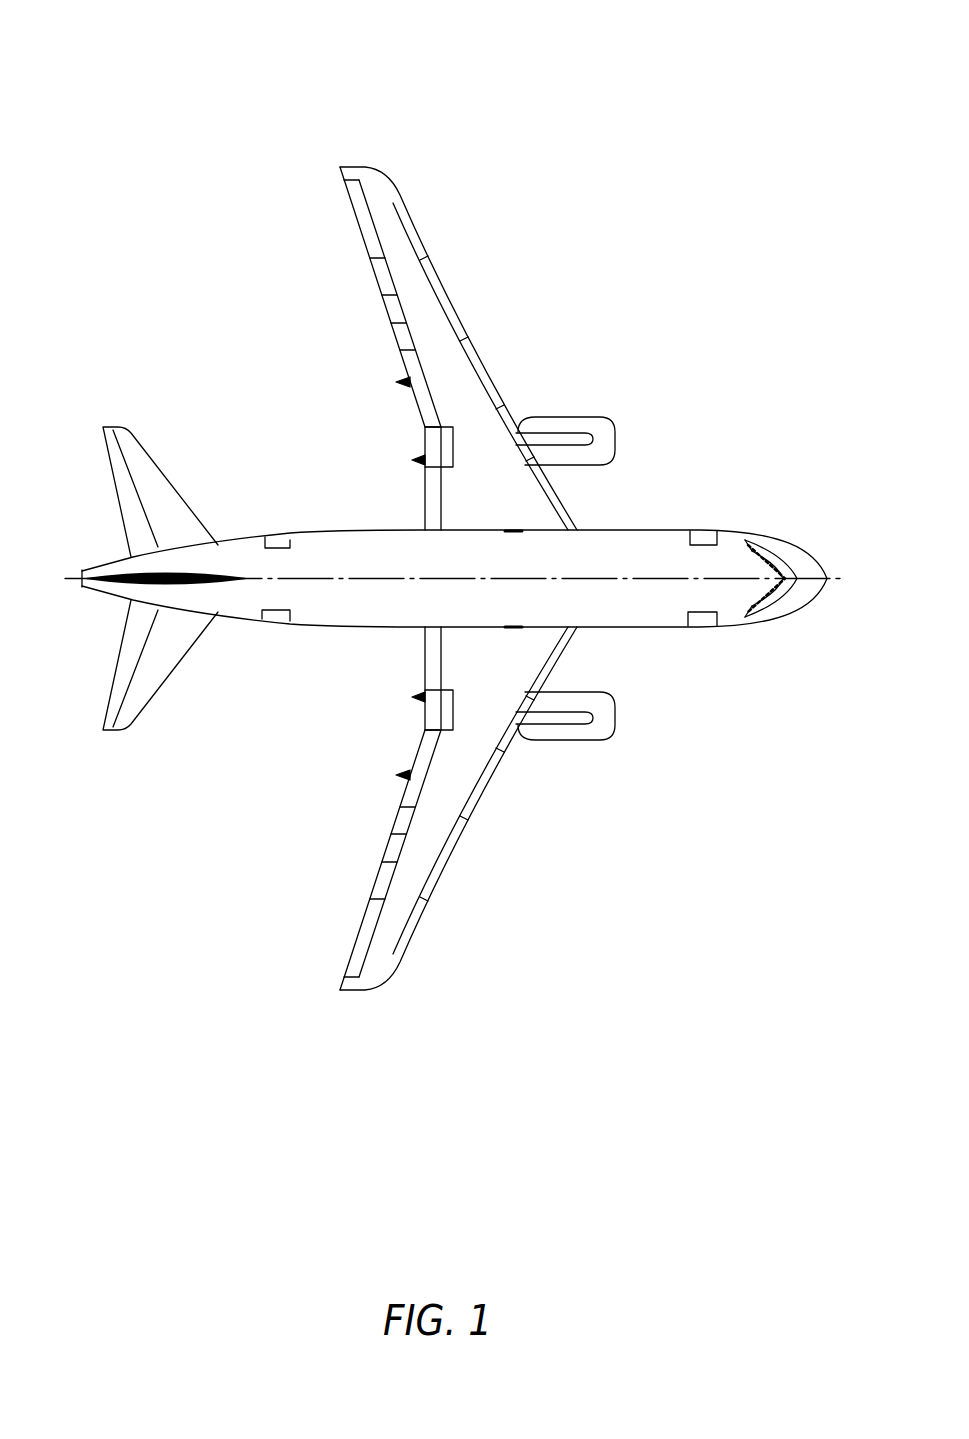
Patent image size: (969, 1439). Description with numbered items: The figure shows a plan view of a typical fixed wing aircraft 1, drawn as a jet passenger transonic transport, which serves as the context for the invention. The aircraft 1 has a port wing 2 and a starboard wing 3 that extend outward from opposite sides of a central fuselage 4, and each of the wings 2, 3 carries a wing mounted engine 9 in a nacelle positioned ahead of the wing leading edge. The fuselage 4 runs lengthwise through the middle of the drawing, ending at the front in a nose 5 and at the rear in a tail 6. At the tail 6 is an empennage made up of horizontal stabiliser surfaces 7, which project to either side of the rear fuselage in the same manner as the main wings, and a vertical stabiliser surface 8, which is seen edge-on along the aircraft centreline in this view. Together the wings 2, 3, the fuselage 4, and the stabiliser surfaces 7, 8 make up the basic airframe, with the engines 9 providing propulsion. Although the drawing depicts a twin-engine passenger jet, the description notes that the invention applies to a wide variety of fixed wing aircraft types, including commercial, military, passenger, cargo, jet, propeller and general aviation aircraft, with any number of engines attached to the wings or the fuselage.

The fixed wing aircraft 1 is at (690, 126).
The port wing 2 is at (437, 330).
The starboard wing 3 is at (463, 763).
The fuselage 4 is at (370, 553).
The nose 5 is at (828, 579).
The tail 6 is at (83, 587).
The horizontal stabiliser surface 7 is at (125, 433).
The vertical stabiliser surface 8 is at (188, 575).
The wing mounted engine 9 is at (600, 440).